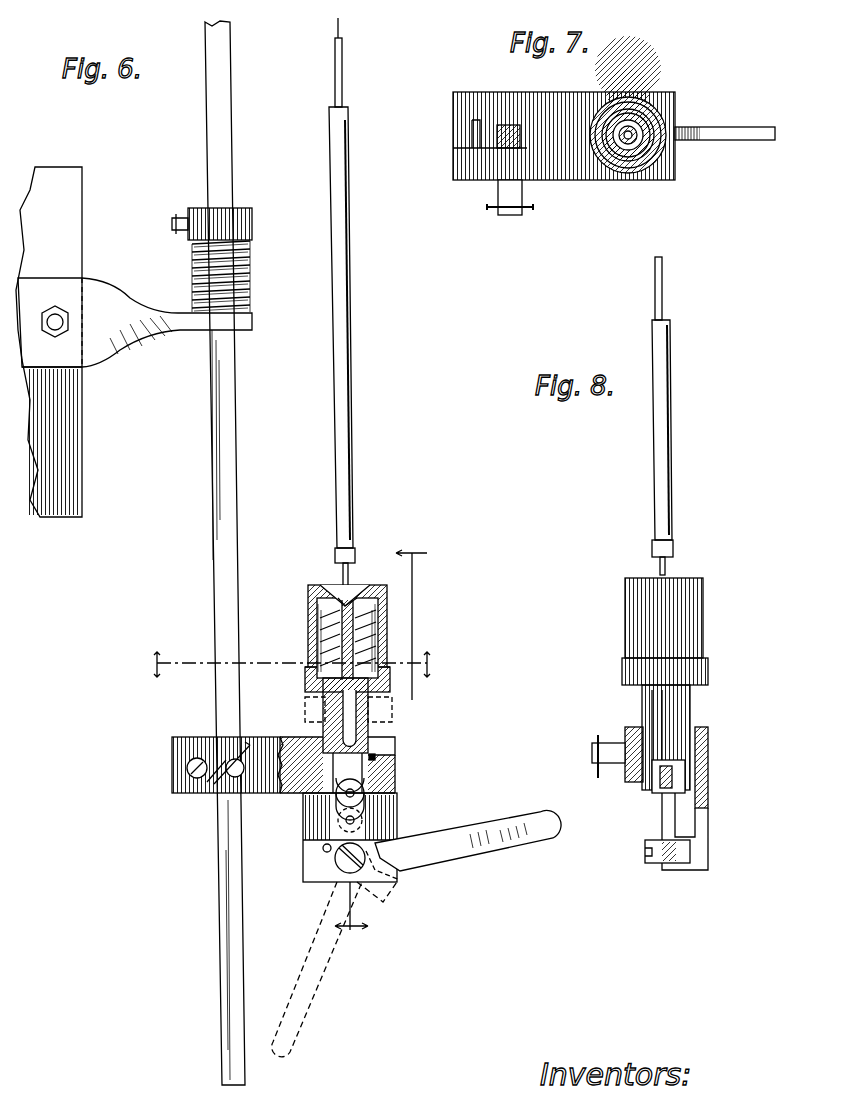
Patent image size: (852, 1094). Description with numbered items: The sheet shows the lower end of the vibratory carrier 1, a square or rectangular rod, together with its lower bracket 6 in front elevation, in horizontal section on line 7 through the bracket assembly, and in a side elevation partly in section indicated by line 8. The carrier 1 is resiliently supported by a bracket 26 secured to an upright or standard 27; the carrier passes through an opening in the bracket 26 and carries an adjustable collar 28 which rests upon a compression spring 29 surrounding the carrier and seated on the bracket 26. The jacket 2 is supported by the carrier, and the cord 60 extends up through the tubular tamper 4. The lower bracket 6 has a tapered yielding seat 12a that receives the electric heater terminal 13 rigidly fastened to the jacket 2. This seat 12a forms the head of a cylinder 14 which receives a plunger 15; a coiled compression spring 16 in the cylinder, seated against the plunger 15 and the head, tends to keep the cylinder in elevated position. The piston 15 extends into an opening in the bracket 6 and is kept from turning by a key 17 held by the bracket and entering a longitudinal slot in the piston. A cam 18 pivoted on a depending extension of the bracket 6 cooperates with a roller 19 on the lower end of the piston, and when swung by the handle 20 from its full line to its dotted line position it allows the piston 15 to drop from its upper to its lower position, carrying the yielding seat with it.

In FIG. 6, the vibratory carrier 1 is at (232, 462).
In FIG. 7, the vibratory carrier 1 is at (497, 135).
In FIG. 6, the jacket 2 is at (351, 462).
In FIG. 8, the jacket 2 is at (671, 413).
In FIG. 6, the tubular tamper 4 is at (342, 78).
In FIG. 8, the tubular tamper 4 is at (662, 293).
In FIG. 6, the lower bracket 6 is at (268, 737).
In FIG. 8, the lower bracket 6 is at (708, 748).
In FIG. 6, the section line 7— 7 is at (289, 664).
In FIG. 6, the section line 8— 8 is at (381, 743).
In FIG. 6, the tapered yielding seat 12a is at (352, 598).
In FIG. 6, the electric heater terminal 13 is at (335, 572).
In FIG. 8, the electric heater terminal 13 is at (665, 566).
In FIG. 6, the cylinder 14 is at (387, 638).
In FIG. 7, the cylinder 14 is at (630, 105).
In FIG. 8, the cylinder 14 is at (703, 627).
In FIG. 6, the plunger 15 is at (392, 710).
In FIG. 7, the plunger 15 is at (630, 148).
In FIG. 8, the plunger 15 is at (690, 707).
In FIG. 6, the coiled compression spring 16 is at (387, 610).
In FIG. 7, the coiled compression spring 16 is at (654, 150).
In FIG. 6, the key 17 is at (380, 748).
In FIG. 8, the key 17 is at (660, 738).
In FIG. 6, the cam 18 is at (333, 830).
In FIG. 8, the cam 18 is at (662, 823).
In FIG. 6, the roller 19 is at (364, 800).
In FIG. 8, the roller 19 is at (652, 790).
In FIG. 6, the handle 20 is at (483, 830).
In FIG. 7, the handle 20 is at (728, 127).
In FIG. 6, the bracket 26 is at (100, 298).
In FIG. 6, the upright or standard 27 is at (70, 203).
In FIG. 6, the collar 28 is at (246, 215).
In FIG. 6, the compression spring 29 is at (252, 270).
In FIG. 6, the cord 60 is at (338, 30).